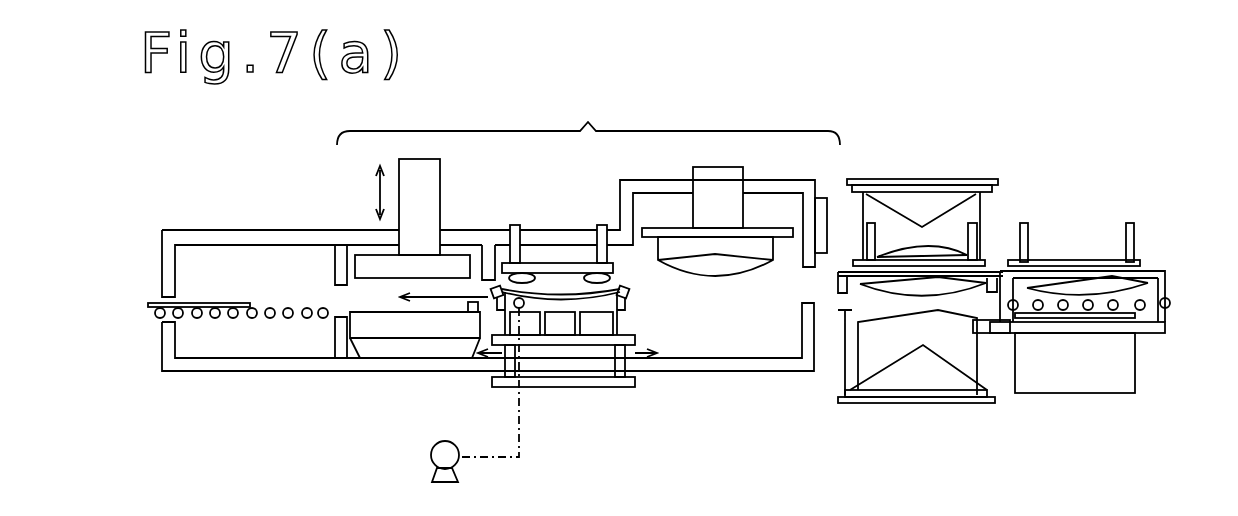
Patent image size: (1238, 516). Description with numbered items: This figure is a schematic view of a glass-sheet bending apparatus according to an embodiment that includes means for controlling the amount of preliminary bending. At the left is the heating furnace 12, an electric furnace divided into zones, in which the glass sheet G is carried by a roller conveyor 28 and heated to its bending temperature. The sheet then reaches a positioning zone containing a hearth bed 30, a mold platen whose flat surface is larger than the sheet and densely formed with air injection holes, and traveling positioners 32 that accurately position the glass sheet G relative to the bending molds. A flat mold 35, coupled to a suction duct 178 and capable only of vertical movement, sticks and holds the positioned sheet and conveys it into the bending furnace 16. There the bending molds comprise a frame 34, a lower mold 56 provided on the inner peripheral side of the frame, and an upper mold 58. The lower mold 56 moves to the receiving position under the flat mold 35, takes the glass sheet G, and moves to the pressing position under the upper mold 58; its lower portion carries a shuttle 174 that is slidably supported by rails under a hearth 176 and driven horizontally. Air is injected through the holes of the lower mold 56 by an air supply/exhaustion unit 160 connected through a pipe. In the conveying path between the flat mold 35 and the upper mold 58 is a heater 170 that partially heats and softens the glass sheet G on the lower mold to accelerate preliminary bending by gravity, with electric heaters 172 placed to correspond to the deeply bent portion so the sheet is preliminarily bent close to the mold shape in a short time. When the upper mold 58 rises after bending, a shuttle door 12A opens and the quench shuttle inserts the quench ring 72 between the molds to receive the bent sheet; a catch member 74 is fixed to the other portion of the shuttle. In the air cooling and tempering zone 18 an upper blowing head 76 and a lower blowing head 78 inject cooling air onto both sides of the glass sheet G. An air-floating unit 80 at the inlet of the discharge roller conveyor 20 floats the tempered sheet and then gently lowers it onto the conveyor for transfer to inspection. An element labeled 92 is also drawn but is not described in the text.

The heating furnace 12 is at (245, 225).
The shuttle door 12A is at (832, 215).
The bending furnace 16 is at (588, 119).
The air cooling and tempering zone 18 is at (962, 170).
The discharge roller conveyor 20 is at (1172, 300).
The roller conveyor 28 is at (248, 320).
The hearth bed 30 is at (410, 328).
The traveling positioners 32 is at (470, 312).
The frame 34 is at (628, 292).
The flat mold 35 is at (458, 265).
The lower mold 56 is at (622, 318).
The upper mold 58 is at (737, 277).
The quench ring 72 is at (987, 276).
The catch member 74 is at (1140, 282).
The upper blowing head 76 is at (968, 217).
The lower blowing head 78 is at (965, 357).
The air-floating unit 80 is at (1075, 385).
The press shaft 92 is at (727, 172).
The air supply/exhaustion unit 160 is at (460, 465).
The heater for accelerating the preliminary bending 170 is at (565, 258).
The electric heaters 172 is at (525, 272).
The shuttle 174 is at (562, 388).
The hearth 176 is at (658, 372).
The suction duct 178 is at (440, 165).
The glass sheet G is at (226, 302).